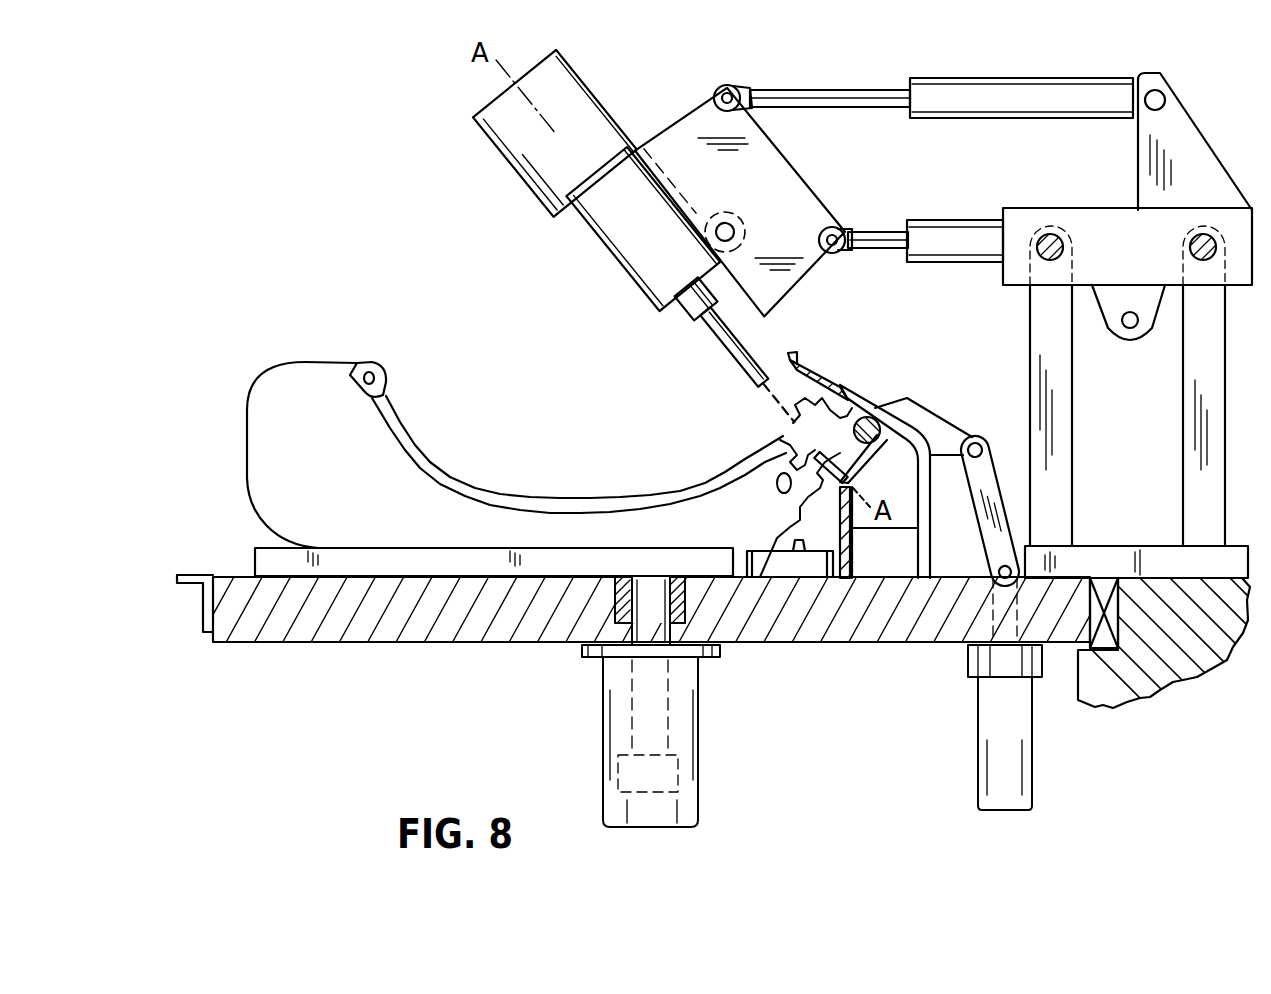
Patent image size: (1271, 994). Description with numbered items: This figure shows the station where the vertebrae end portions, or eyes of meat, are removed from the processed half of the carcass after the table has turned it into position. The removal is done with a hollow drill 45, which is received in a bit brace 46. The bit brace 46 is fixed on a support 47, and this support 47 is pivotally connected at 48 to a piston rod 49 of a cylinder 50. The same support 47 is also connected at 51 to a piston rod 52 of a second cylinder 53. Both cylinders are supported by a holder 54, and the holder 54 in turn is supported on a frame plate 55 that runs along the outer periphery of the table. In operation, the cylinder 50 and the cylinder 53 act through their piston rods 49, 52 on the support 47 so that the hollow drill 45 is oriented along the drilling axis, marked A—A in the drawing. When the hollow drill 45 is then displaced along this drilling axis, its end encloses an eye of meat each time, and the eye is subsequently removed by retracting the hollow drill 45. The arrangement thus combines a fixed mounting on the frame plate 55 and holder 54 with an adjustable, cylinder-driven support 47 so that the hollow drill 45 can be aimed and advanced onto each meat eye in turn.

The hollow drill 45 is at (748, 378).
The bit brace 46 is at (632, 250).
The support 47 is at (688, 134).
The pivotal connection 48 is at (843, 218).
The piston rod 49 is at (886, 228).
The cylinder 50 is at (953, 232).
The connection 51 is at (730, 87).
The piston rod 52 is at (832, 90).
The cylinder 53 is at (1020, 120).
The holder 54 is at (1088, 210).
The frame plate 55 is at (1178, 653).